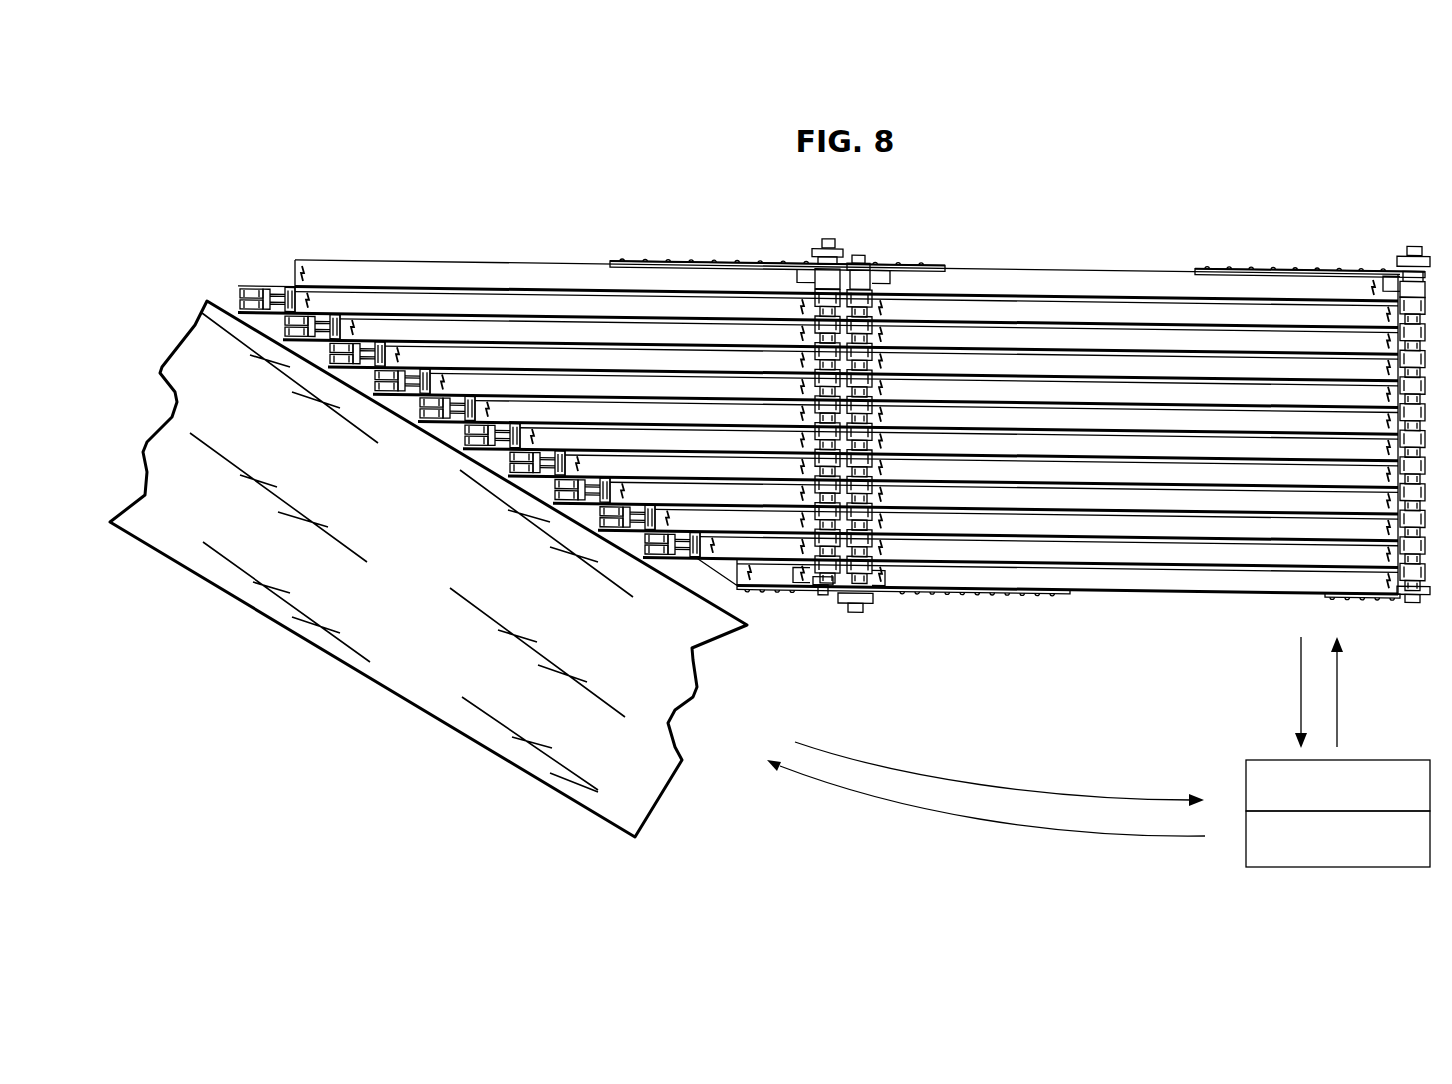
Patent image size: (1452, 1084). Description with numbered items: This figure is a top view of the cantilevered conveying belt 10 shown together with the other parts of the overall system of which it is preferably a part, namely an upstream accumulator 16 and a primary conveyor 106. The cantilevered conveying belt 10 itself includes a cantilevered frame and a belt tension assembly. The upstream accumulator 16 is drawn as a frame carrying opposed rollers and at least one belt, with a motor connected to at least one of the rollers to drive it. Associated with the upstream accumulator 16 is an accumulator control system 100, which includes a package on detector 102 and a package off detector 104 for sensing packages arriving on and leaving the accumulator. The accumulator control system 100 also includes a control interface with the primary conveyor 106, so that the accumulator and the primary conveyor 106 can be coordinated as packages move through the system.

The cantilevered conveying belt 10 is at (583, 180).
The upstream accumulator 16 is at (1138, 218).
The accumulator control system 100 is at (1226, 773).
The package "on" detector 102 is at (1338, 785).
The package "off" detector 104 is at (1338, 839).
The primary conveyor 106 is at (220, 580).